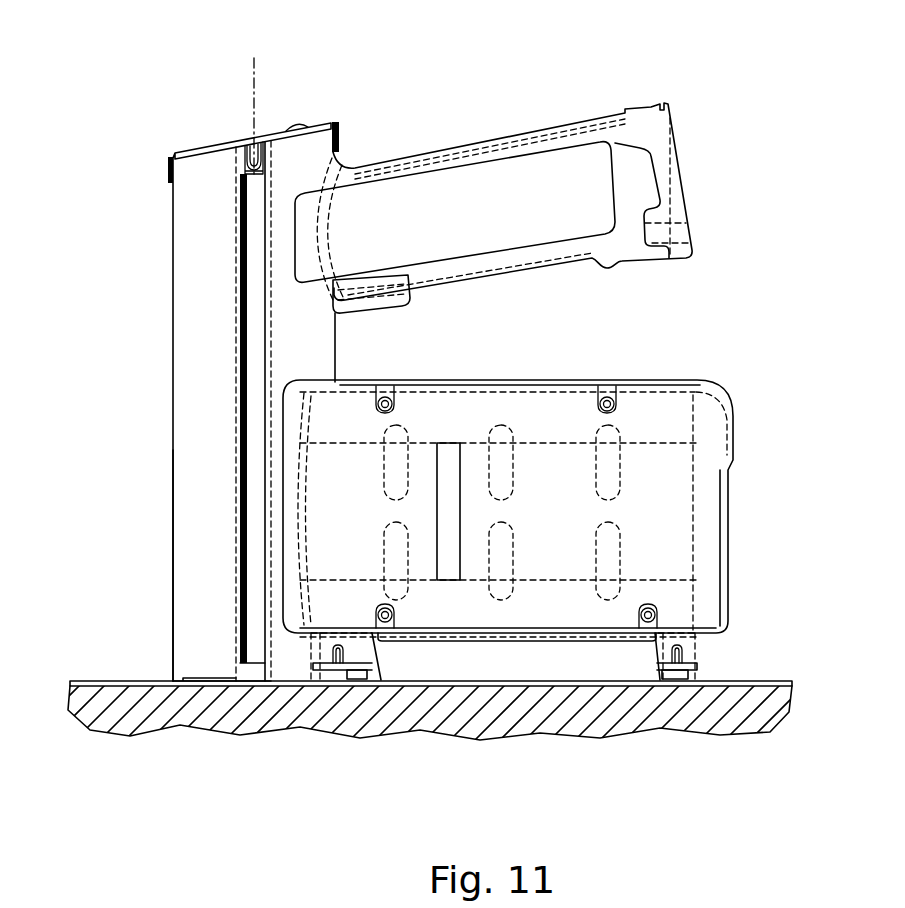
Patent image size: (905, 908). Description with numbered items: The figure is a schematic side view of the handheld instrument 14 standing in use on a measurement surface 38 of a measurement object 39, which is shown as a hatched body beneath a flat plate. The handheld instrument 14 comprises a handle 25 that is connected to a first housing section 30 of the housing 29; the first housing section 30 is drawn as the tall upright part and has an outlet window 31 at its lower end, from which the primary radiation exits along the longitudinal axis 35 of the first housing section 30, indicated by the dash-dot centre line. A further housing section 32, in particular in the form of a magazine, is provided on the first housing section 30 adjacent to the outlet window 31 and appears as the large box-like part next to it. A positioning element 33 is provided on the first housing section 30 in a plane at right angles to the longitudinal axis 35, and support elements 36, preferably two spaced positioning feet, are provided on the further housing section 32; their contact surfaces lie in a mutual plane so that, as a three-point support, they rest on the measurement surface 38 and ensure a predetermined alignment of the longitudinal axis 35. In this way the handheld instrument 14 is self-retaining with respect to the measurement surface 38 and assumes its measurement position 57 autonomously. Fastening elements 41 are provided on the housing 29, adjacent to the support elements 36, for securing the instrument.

The handheld instrument 14 is at (422, 95).
The handle 25 is at (567, 127).
The housing 29 is at (140, 405).
The first housing section 30 is at (173, 325).
The outlet window 31 is at (237, 687).
The further housing section 32 is at (655, 380).
The positioning element 33 is at (183, 685).
The longitudinal axis 35 is at (258, 78).
The support element 36 is at (351, 673).
The measurement surface 38 is at (125, 679).
The measurement object 39 is at (103, 725).
The fastening element 41 is at (375, 667).
The measurement position 57 is at (127, 568).